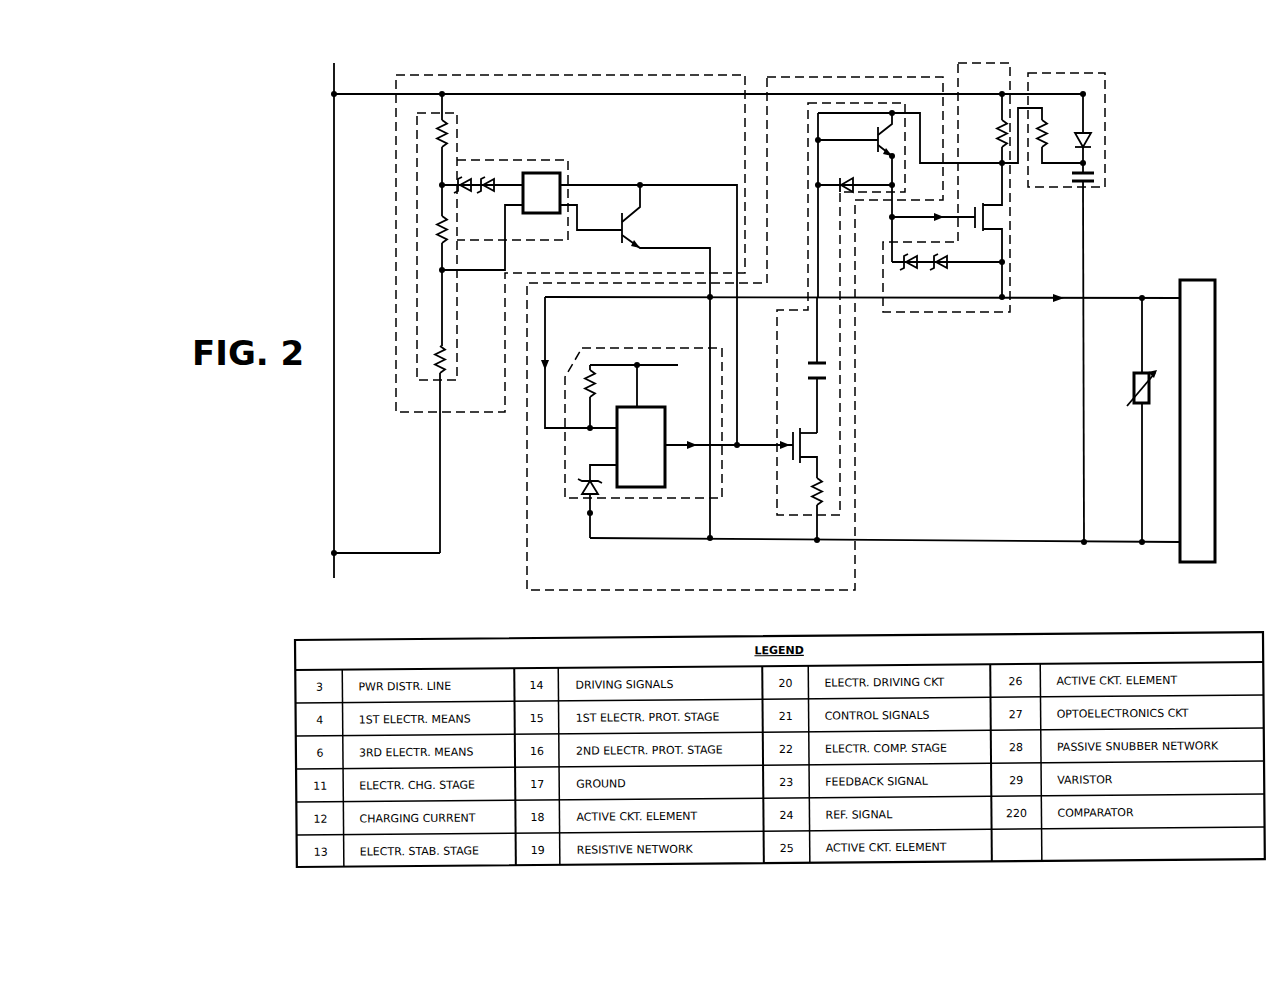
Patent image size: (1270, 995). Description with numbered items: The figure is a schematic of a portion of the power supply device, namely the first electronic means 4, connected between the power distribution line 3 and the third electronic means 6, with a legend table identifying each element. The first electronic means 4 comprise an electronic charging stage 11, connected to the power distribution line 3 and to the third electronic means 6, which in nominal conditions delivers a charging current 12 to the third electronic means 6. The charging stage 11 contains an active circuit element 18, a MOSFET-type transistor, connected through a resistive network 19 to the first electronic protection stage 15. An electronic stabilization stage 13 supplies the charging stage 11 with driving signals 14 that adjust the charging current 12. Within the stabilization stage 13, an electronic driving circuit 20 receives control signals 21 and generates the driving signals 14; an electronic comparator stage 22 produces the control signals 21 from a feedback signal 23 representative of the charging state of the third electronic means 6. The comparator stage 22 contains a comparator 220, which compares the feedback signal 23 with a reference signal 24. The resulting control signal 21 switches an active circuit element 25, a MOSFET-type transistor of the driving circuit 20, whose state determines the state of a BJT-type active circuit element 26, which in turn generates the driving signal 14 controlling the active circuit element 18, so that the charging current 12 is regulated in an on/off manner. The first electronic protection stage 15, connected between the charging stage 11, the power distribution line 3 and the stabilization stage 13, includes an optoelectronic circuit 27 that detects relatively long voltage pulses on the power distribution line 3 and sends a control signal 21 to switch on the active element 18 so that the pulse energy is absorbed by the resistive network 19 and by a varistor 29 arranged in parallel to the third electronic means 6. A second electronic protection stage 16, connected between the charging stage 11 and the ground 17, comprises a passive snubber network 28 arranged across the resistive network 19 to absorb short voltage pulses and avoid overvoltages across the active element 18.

The power distribution line 3 is at (336, 76).
The first electronic means 4 is at (452, 602).
The third electronic means 6 is at (1192, 403).
The electronic charging stage 11 is at (973, 62).
The charging current 12 is at (1038, 302).
The electronic stabilization stage 13 is at (838, 77).
The driving signals 14 is at (920, 218).
The first electronic protection stage 15 is at (584, 75).
The second electronic protection stage 16 is at (1103, 101).
The ground 17 is at (1081, 552).
The active circuit element 18 is at (1003, 222).
The resistive network 19 is at (996, 140).
The electronic driving circuit 20 is at (808, 230).
The control signals 21 is at (757, 458).
The electronic comparator stage 22 is at (624, 348).
The feedback signal 23 is at (547, 339).
The reference signal 24 is at (585, 520).
The active circuit element 25 is at (833, 441).
The active circuit element 26 is at (881, 148).
The optoelectronic circuit 27 is at (526, 160).
The passive snubber network 28 is at (1083, 92).
The varistor 29 is at (1133, 383).
The comparator 220 is at (637, 470).